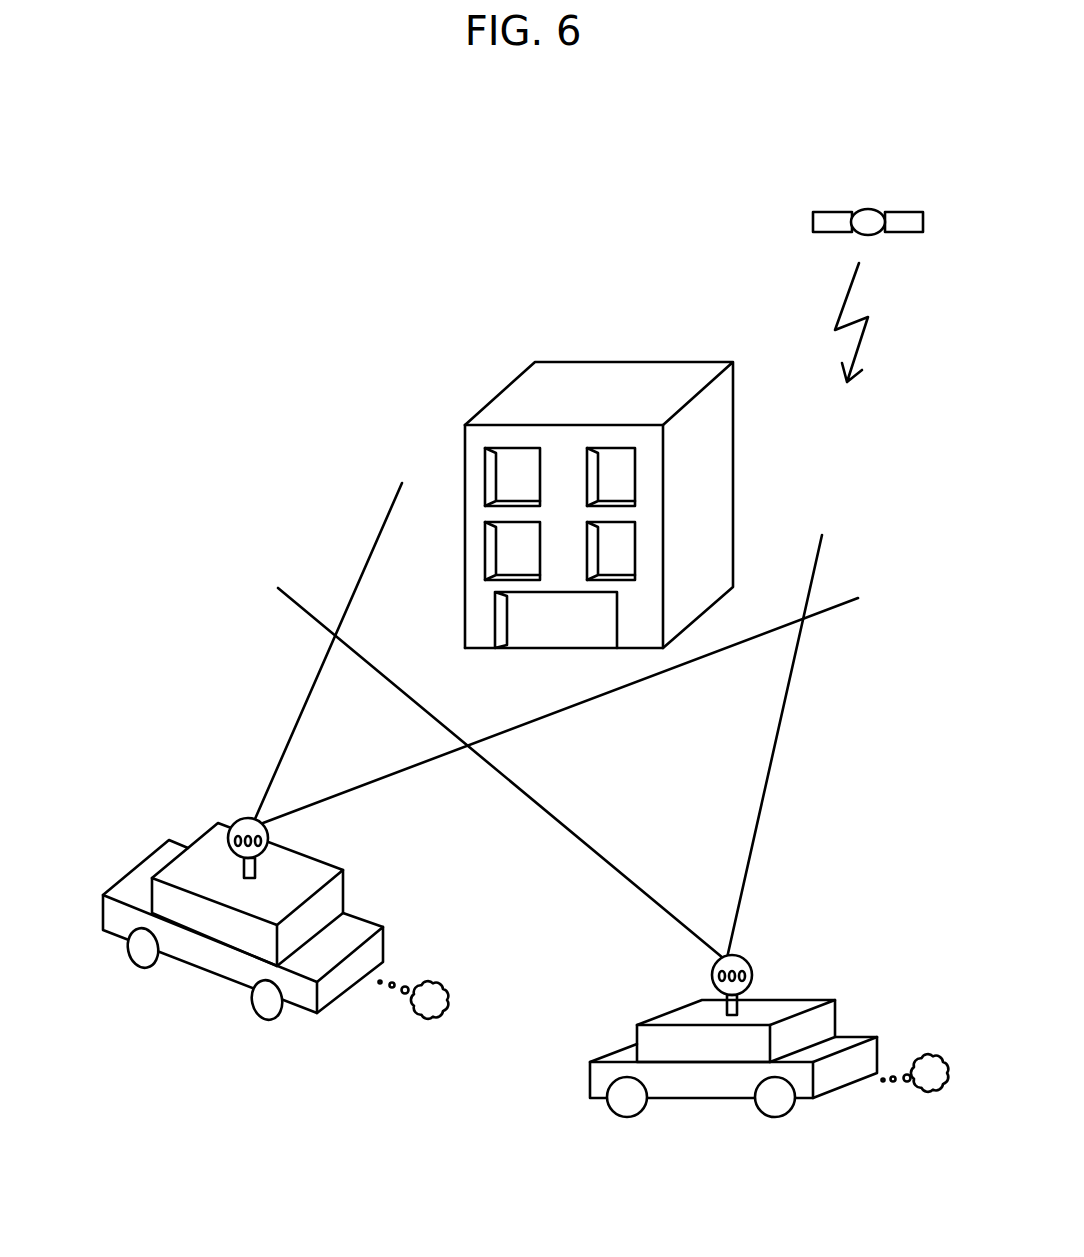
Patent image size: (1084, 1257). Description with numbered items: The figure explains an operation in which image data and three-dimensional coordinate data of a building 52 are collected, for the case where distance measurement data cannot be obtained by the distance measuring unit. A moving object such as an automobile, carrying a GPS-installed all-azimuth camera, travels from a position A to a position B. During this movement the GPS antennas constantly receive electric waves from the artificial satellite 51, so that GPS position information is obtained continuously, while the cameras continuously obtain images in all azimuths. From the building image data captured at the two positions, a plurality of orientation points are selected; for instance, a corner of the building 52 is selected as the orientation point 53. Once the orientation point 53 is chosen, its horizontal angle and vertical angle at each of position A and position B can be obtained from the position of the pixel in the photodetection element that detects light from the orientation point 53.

The artificial satellite 51 is at (868, 208).
The building 52 is at (733, 470).
The orientation point 53 is at (465, 425).